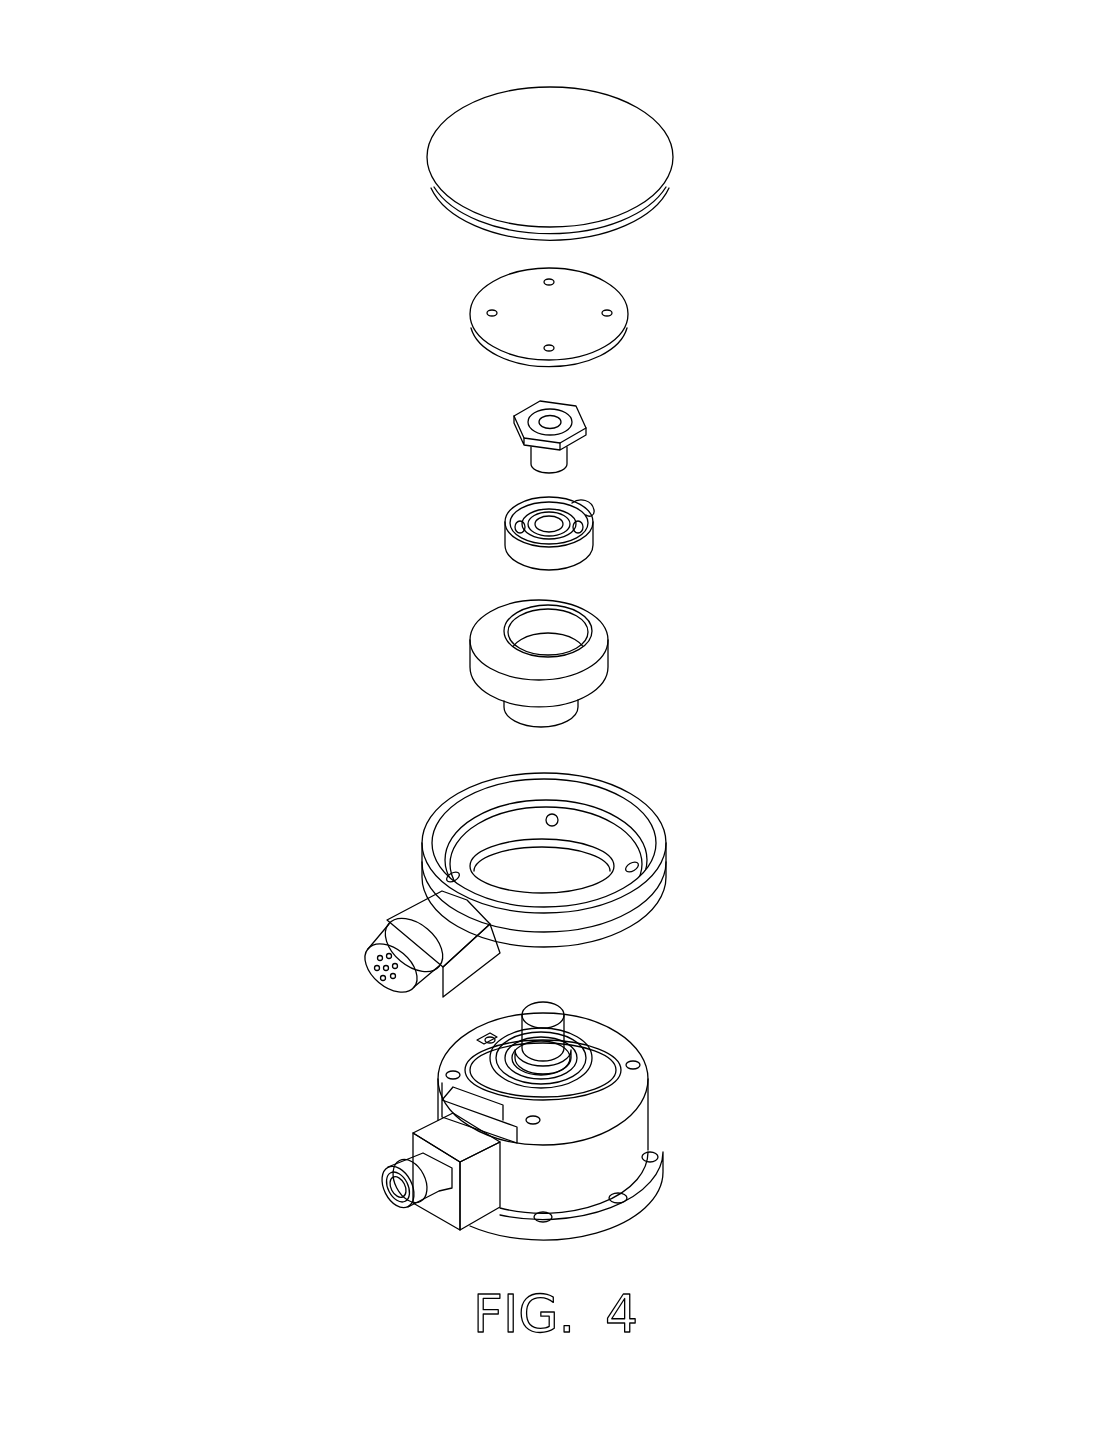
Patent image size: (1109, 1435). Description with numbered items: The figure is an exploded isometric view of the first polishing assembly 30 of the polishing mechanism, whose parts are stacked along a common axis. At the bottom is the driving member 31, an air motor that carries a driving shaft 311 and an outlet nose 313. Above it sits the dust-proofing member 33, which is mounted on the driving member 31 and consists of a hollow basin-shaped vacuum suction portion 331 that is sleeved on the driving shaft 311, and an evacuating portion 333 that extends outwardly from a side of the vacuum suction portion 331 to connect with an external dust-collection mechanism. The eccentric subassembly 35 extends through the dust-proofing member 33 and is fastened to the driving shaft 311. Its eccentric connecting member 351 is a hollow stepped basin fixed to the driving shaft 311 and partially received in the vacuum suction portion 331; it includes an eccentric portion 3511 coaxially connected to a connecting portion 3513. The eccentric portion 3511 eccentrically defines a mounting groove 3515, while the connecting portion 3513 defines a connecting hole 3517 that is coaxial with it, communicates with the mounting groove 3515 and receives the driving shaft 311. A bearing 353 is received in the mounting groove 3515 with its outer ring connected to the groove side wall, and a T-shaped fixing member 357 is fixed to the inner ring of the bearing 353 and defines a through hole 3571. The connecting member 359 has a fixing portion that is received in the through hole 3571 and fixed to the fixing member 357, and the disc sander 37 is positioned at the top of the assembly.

The first polishing assembly 30 is at (555, 38).
The driving member 31 is at (622, 1143).
The driving shaft 311 is at (548, 1012).
The outlet nose 313 is at (413, 1150).
The dust-proofing member 33 is at (322, 797).
The vacuum suction portion 331 is at (470, 845).
The evacuating portion 333 is at (430, 905).
The eccentric subassembly 35 is at (730, 385).
The eccentric connecting member 351 is at (600, 670).
The eccentric portion 3511 is at (478, 672).
The connecting portion 3513 is at (518, 717).
The mounting groove 3515 is at (538, 620).
The connecting hole 3517 is at (537, 652).
The bearing 353 is at (582, 552).
The fixing member 357 is at (573, 430).
The through hole 3571 is at (543, 421).
The connecting member 359 is at (592, 342).
The disc sander 37 is at (652, 146).